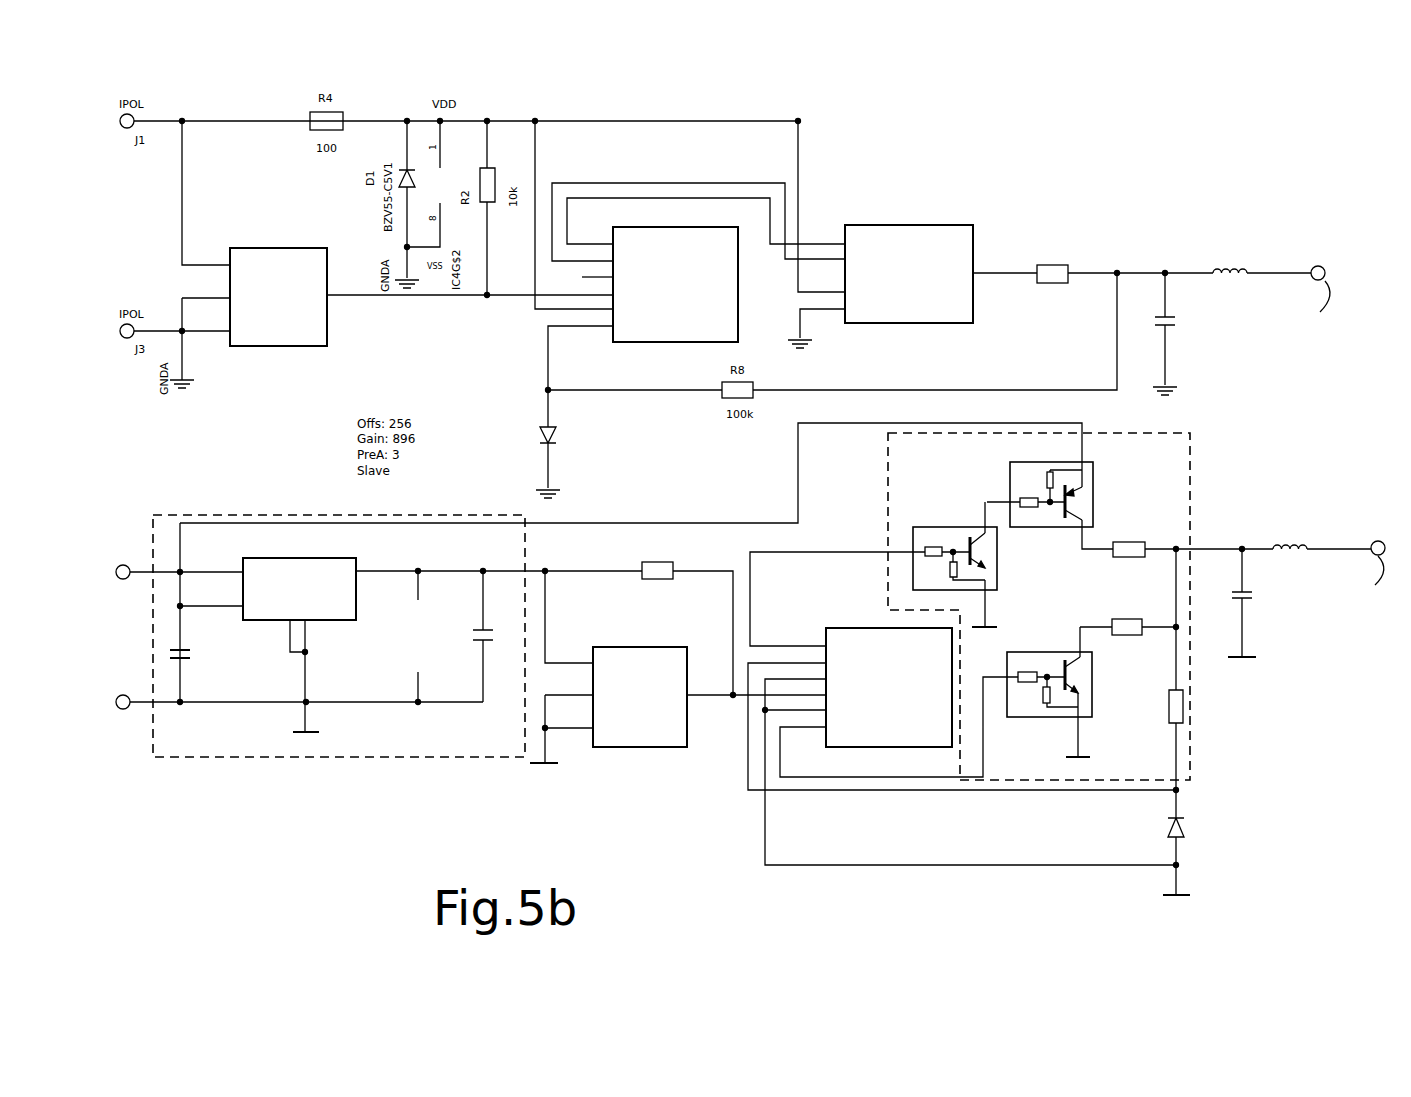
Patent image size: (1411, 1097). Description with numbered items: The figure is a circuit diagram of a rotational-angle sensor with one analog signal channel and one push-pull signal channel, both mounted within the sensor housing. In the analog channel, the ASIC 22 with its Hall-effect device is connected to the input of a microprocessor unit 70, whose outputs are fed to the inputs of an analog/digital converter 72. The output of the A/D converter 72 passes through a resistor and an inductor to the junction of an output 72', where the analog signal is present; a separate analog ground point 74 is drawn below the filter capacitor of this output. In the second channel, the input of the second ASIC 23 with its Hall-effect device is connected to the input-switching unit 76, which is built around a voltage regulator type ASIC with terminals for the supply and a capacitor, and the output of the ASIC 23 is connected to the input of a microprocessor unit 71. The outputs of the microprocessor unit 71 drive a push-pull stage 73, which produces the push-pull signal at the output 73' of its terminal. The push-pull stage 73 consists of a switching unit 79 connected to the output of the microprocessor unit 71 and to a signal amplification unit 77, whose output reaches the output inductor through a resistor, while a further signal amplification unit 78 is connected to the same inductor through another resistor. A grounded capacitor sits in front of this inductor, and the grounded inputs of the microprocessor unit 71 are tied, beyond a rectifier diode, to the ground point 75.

The ASIC 22 is at (316, 314).
The second ASIC 23 is at (643, 728).
The microprocessor unit 70 is at (717, 291).
The microprocessor unit 71 is at (826, 729).
The analog/digital converter 72 is at (994, 259).
The output 72' is at (1284, 274).
The push-pull stage 73 is at (1080, 664).
The output 73' is at (1304, 575).
The analog ground connection 74 is at (1165, 392).
The ground point 75 is at (1180, 893).
The input-switching unit 76 is at (373, 760).
The signal amplification unit 77 is at (1093, 487).
The signal amplification unit 78 is at (1085, 698).
The switching unit 79 is at (997, 553).